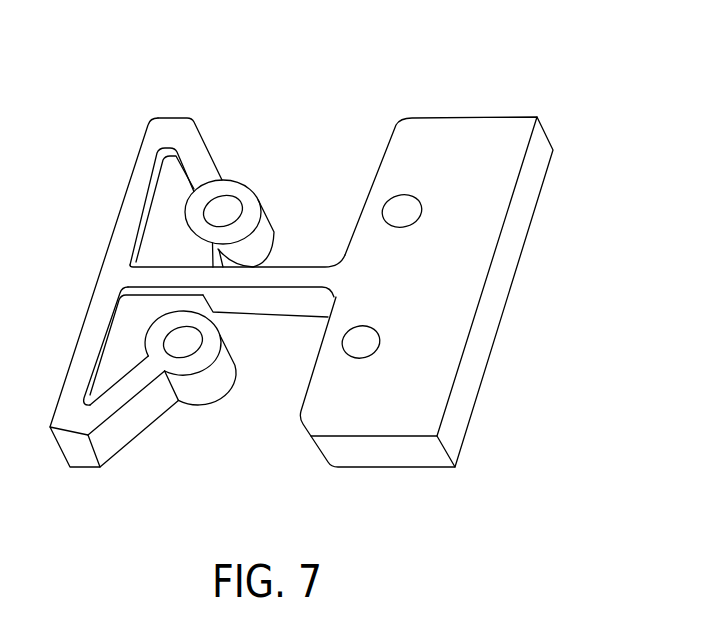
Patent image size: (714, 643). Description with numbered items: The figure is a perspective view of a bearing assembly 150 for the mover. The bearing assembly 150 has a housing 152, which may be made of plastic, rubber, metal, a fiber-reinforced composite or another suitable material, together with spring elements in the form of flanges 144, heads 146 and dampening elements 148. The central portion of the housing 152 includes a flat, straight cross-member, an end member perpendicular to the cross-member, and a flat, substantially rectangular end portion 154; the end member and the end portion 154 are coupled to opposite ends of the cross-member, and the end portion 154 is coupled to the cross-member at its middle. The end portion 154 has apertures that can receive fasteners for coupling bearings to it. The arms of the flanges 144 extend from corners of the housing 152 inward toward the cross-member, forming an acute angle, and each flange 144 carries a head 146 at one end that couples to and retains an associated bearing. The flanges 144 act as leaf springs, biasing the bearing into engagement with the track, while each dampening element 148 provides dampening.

The bearing assembly 150 is at (296, 270).
The flange 144 is at (132, 442).
The head 146 is at (206, 405).
The dampening element 148 is at (165, 218).
The housing 152 is at (300, 266).
The end portion 154 is at (383, 450).